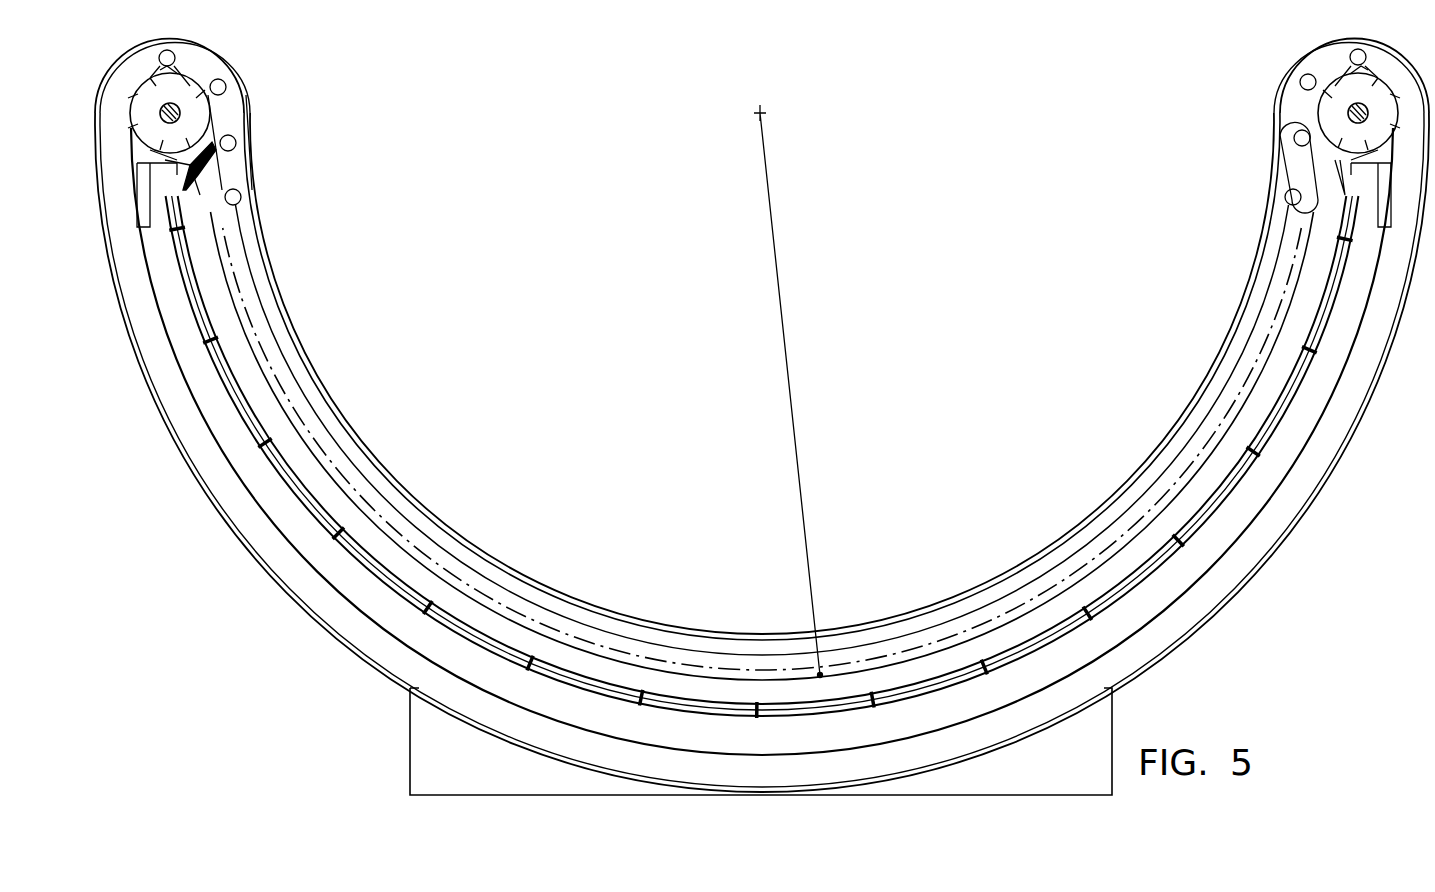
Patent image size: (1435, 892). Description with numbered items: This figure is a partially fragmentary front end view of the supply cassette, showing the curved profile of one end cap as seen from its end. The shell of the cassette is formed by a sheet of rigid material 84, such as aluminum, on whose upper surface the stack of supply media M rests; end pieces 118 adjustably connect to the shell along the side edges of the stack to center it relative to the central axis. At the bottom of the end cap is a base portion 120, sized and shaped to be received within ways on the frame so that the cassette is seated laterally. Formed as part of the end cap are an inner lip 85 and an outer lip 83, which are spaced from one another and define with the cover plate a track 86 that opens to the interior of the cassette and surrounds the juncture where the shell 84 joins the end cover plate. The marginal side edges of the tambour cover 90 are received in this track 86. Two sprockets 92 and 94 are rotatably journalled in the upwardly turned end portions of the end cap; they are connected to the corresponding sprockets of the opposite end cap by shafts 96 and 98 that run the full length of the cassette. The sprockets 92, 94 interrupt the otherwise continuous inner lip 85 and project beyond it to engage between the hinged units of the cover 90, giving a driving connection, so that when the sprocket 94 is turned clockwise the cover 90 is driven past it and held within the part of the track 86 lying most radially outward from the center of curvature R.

The outer lip 83 is at (1186, 645).
The sheet of rigid material 84 is at (1045, 655).
The inner lip 85 is at (1203, 592).
The track 86 is at (594, 617).
The cover 90 is at (230, 104).
The sprocket 92 is at (197, 116).
The sprocket 94 is at (1330, 109).
The shaft 96 is at (183, 120).
The shaft 98 is at (1318, 122).
The end piece 118 is at (237, 178).
The base portion 120 is at (410, 745).
The media M is at (245, 296).
The center of curvature R is at (788, 391).